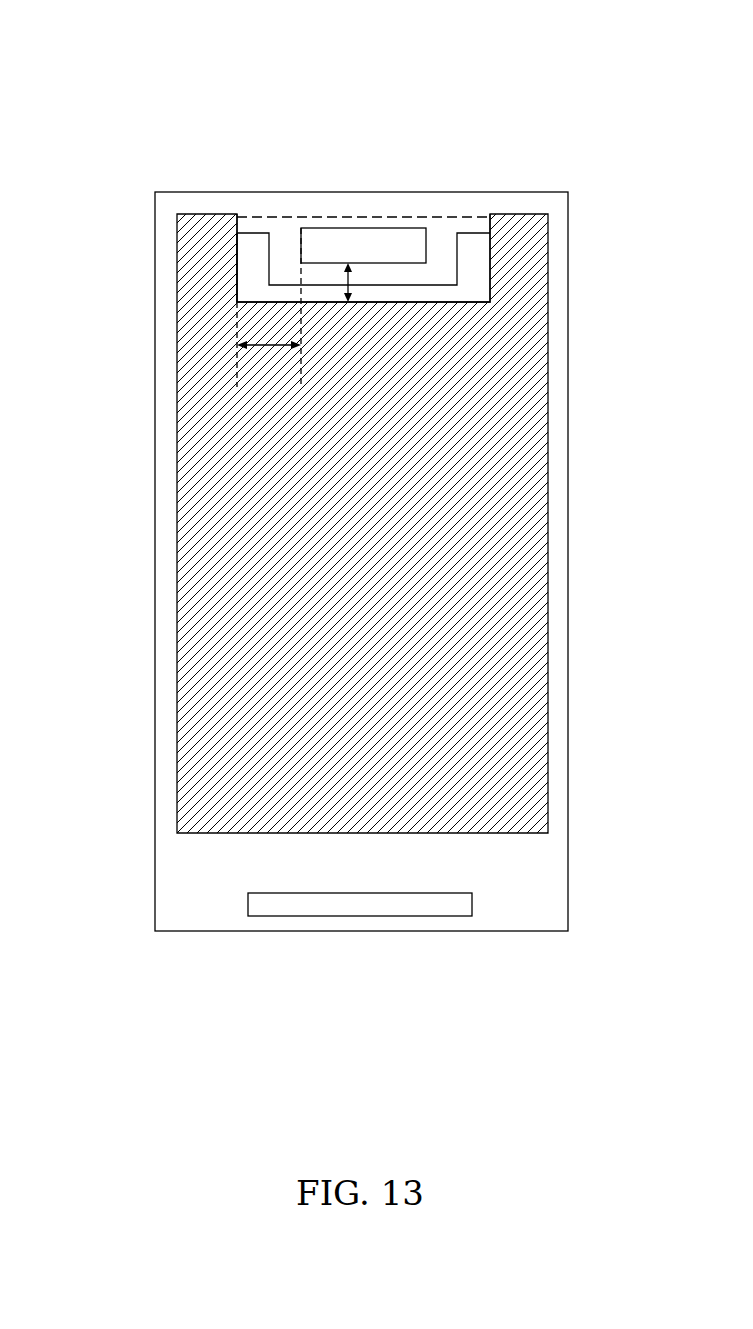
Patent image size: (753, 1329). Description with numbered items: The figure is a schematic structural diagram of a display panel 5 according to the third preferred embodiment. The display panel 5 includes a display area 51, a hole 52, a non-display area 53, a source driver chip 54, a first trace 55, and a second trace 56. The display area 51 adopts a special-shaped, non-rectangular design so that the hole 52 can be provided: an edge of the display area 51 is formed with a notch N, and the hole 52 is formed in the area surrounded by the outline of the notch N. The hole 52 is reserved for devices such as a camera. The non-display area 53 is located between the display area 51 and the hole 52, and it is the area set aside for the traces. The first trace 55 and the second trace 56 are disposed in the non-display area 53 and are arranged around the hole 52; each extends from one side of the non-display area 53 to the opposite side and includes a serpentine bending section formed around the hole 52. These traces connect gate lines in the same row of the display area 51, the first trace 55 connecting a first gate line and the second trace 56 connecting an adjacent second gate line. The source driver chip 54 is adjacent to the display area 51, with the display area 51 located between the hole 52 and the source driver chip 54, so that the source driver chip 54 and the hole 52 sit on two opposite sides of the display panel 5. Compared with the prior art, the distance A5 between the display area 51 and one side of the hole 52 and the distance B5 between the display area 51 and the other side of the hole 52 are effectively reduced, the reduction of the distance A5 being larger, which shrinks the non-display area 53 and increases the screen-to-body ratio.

The display panel 5 is at (170, 58).
The display area 51 is at (547, 450).
The hole 52 is at (322, 227).
The non-display area 53 is at (390, 215).
The first trace 55 is at (258, 230).
The second trace 56 is at (264, 262).
The source driver chip 54 is at (297, 916).
The notch N is at (480, 287).
The distance between the display area and one side of the hole A5 is at (269, 307).
The distance between the display area and the other side of the hole B5 is at (363, 282).